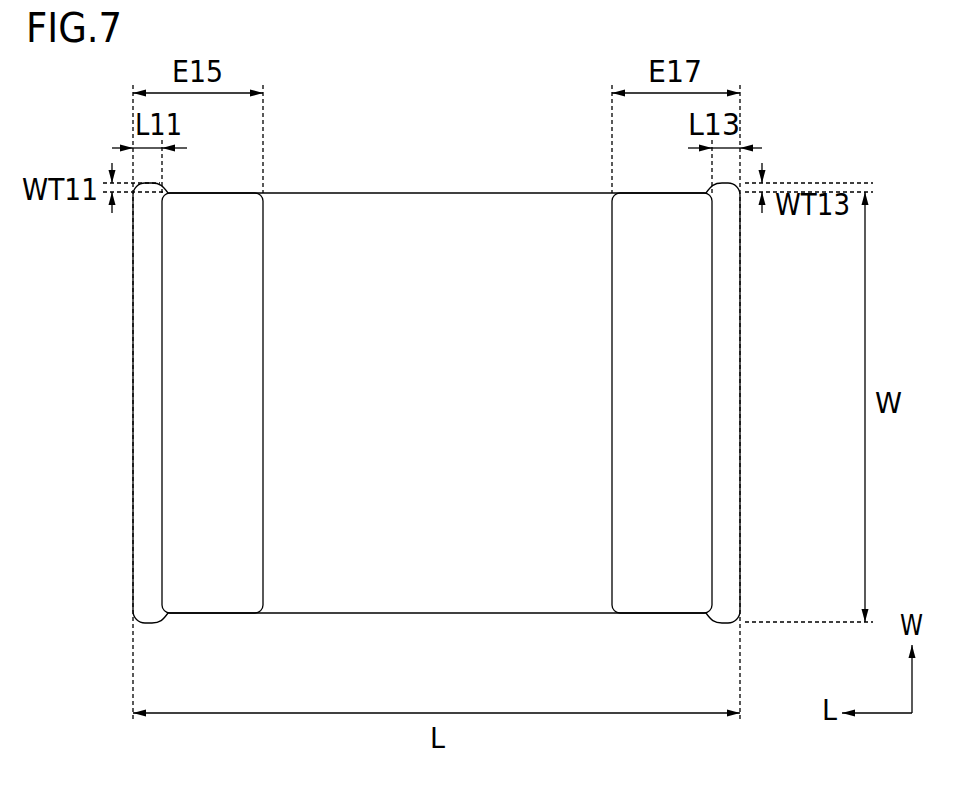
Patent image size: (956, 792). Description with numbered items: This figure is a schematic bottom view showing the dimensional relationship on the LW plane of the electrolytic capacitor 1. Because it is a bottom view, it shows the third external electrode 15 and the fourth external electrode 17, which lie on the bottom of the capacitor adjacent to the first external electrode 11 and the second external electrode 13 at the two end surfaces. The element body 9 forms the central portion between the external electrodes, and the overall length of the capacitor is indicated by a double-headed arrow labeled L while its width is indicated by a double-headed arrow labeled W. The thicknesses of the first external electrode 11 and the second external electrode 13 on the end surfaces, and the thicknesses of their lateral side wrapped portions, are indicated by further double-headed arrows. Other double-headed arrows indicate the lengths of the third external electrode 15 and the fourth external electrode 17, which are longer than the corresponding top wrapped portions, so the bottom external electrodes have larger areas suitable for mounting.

The electrolytic capacitor 1 is at (787, 141).
The element body 9 is at (534, 189).
The first external electrode 11 is at (175, 629).
The second external electrode 13 is at (706, 629).
The third external electrode 15 is at (235, 600).
The fourth external electrode 17 is at (643, 600).